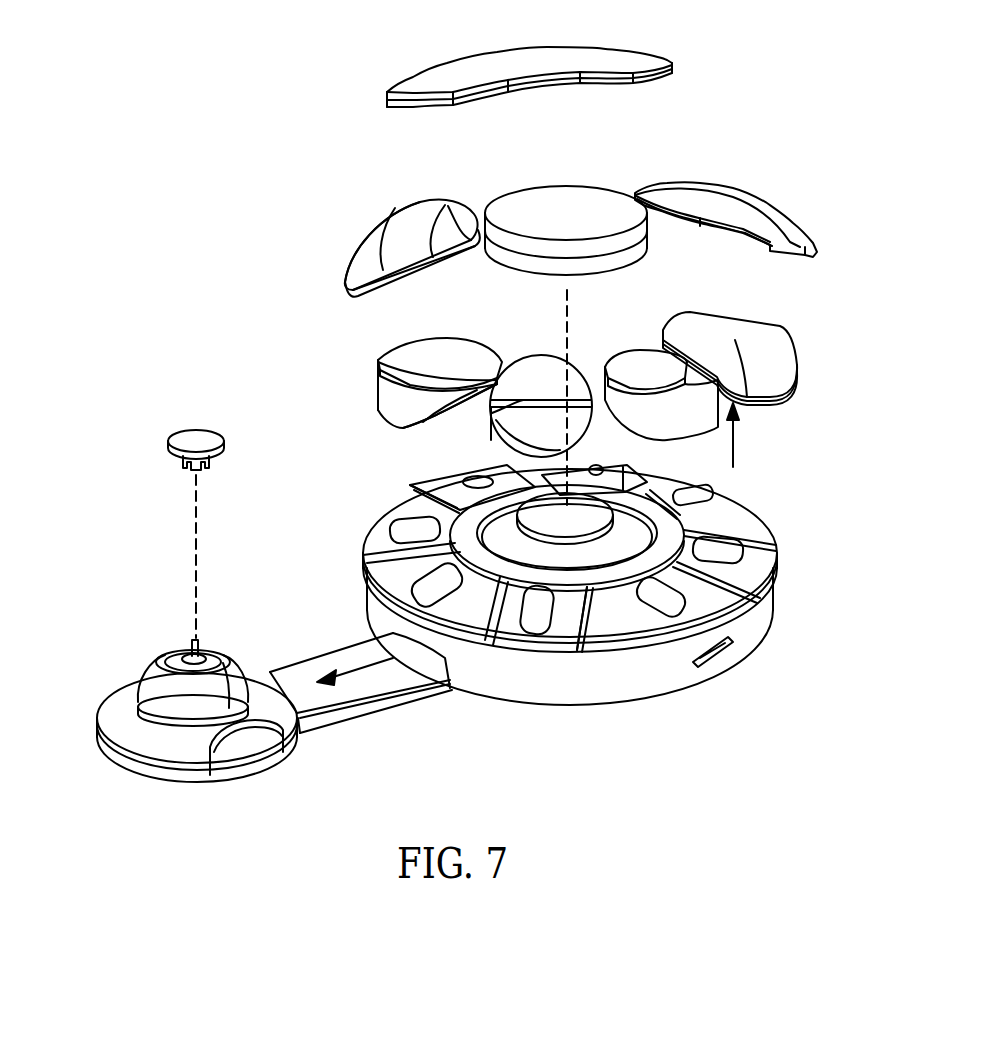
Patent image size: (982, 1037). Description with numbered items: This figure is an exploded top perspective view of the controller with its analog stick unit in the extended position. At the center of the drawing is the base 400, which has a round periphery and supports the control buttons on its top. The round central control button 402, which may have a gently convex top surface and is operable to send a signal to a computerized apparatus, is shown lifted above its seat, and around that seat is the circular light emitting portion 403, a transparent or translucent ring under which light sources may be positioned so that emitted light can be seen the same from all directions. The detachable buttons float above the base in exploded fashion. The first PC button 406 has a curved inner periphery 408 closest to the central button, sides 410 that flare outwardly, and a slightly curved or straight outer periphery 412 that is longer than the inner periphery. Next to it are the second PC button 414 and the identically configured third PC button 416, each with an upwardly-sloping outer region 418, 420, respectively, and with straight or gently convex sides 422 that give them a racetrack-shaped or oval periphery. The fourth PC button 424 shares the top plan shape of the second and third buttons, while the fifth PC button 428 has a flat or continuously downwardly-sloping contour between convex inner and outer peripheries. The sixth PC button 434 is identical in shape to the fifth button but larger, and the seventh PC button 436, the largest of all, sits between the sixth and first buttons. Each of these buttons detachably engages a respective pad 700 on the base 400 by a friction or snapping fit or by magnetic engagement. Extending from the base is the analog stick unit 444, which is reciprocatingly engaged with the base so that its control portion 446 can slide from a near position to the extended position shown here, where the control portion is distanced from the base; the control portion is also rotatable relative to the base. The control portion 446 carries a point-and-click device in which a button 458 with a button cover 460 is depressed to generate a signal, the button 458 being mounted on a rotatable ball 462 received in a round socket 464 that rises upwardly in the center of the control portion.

The base 400 is at (638, 680).
The central control button 402 is at (568, 197).
The circular light emitting portion 403 is at (627, 498).
The first PC button 406 is at (403, 217).
The curved inner periphery 408 is at (468, 225).
The sides 410 is at (395, 272).
The outer periphery 412 is at (347, 240).
The second PC button 414 is at (475, 375).
The third PC button 416 is at (547, 390).
The upwardly-sloping outer region 418 is at (377, 373).
The upwardly-sloping outer region 420 is at (493, 437).
The sides 422 is at (440, 393).
The fourth PC button 424 is at (643, 382).
The fifth PC button 428 is at (737, 347).
The sixth PC button 434 is at (727, 207).
The seventh PC button 436 is at (630, 52).
The analog stick unit 444 is at (323, 600).
The control portion 446 is at (110, 757).
The button 458 is at (187, 650).
The button cover 460 is at (190, 435).
The rotatable ball 462 is at (223, 653).
The round socket 464 is at (153, 687).
The pad 700 is at (563, 630).